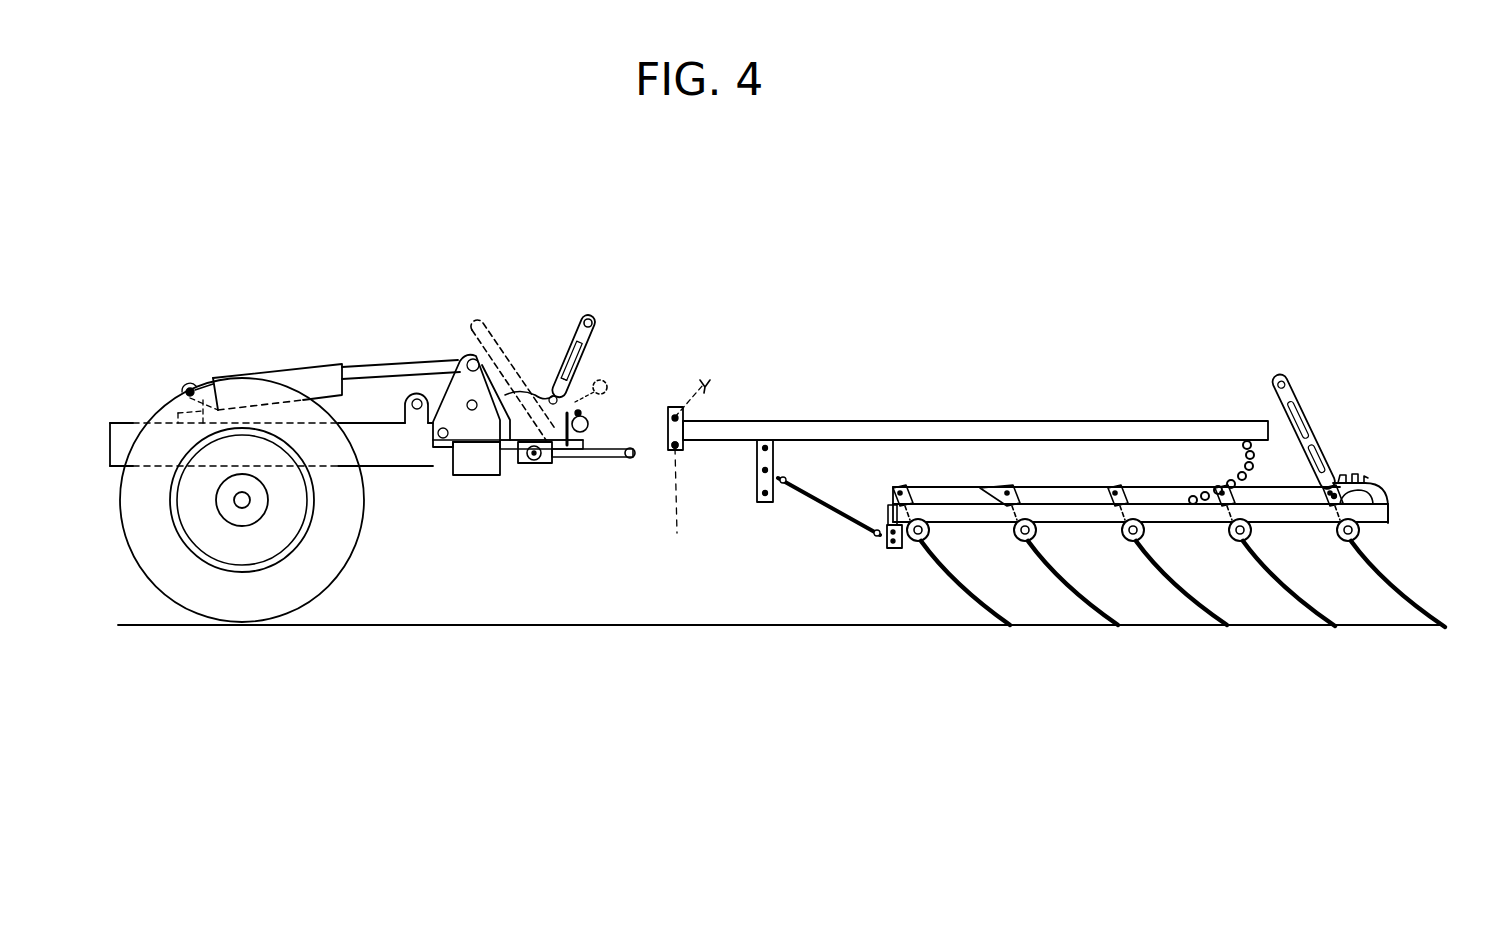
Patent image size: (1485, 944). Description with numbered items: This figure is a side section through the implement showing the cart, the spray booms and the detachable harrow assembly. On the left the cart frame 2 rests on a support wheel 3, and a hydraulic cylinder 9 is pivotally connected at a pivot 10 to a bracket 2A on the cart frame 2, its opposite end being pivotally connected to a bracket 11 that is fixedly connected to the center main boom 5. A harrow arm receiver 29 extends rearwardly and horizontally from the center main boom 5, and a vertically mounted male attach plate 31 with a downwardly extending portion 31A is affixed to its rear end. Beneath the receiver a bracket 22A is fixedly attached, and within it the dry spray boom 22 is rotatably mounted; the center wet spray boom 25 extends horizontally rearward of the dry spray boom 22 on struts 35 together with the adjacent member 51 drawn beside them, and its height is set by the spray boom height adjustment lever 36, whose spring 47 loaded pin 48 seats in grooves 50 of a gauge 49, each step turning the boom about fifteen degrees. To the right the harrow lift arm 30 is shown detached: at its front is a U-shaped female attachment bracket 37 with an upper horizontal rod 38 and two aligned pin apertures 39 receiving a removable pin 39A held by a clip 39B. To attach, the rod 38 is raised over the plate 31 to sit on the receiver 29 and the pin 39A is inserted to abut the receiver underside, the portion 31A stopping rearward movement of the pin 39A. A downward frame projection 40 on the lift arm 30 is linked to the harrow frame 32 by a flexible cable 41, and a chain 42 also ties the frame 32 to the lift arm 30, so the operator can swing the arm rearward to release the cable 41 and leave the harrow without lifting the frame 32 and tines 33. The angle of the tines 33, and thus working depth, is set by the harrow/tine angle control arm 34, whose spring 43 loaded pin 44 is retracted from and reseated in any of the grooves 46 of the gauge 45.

The cart frame 2 is at (402, 457).
The bracket 2A is at (192, 415).
The support wheel 3 is at (325, 550).
The center main boom 5 is at (477, 460).
The hydraulic cylinder 9 is at (320, 377).
The pivot connection 10 is at (190, 388).
The bracket 11 is at (475, 387).
The dry spray boom 22 is at (536, 461).
The bracket 22A is at (522, 464).
The center wet spray boom 25 is at (643, 465).
The harrow arm receiver 29 is at (507, 441).
The harrow lift arm 30 is at (983, 420).
The attach plate 31 is at (537, 398).
The downwardly extending portion 31A is at (567, 447).
The harrow frame 32 is at (1172, 623).
The harrow tines 33 is at (960, 587).
The harrow/tine angle control arm 34 is at (1283, 379).
The struts 35 is at (591, 451).
The spray boom height adjustment lever 36 is at (595, 321).
The female harrow lift arm attachment bracket 37 is at (675, 448).
The upper horizontal rod 38 is at (678, 410).
The pin apertures 39 is at (678, 448).
The removable pin 39A is at (688, 535).
The clip 39B is at (718, 386).
The frame projection 40 is at (773, 502).
The flexible cable 41 is at (832, 502).
The chain 42 is at (1238, 468).
The spring 43 is at (1318, 440).
The pin 44 is at (1332, 477).
The gauge 45 is at (1385, 490).
The grooves 46 is at (1365, 470).
The spring 47 is at (582, 355).
The pin 48 is at (578, 390).
The gauge 49 is at (589, 425).
The grooves 50 is at (580, 415).
The connecting rod 51 is at (623, 458).